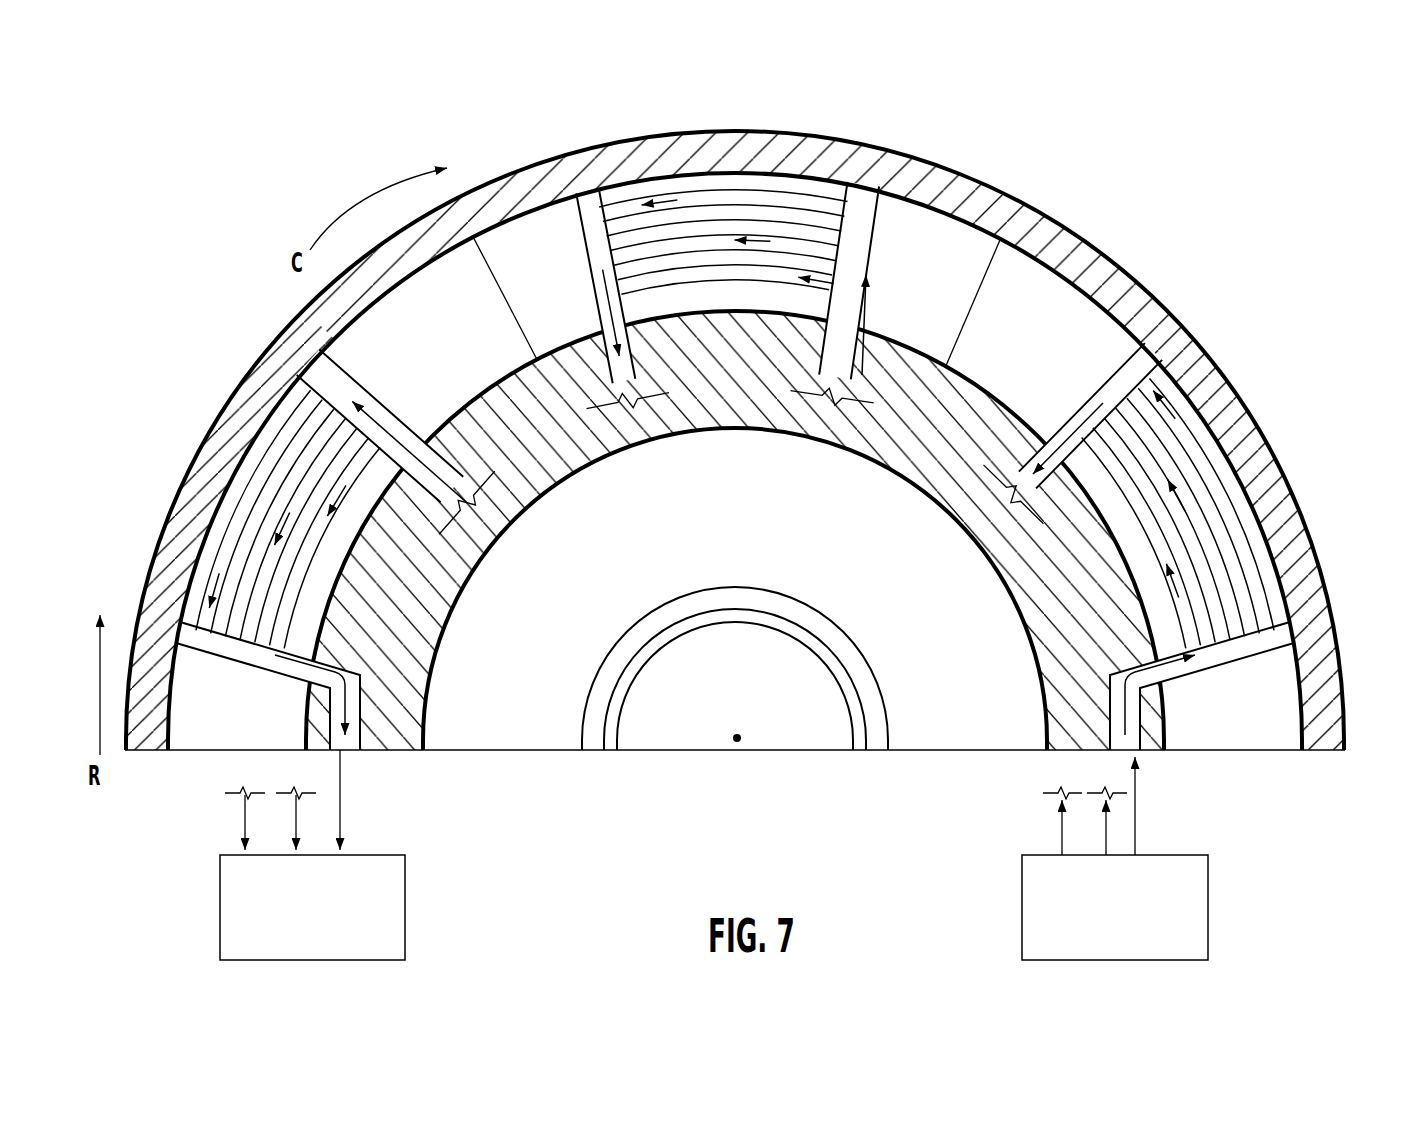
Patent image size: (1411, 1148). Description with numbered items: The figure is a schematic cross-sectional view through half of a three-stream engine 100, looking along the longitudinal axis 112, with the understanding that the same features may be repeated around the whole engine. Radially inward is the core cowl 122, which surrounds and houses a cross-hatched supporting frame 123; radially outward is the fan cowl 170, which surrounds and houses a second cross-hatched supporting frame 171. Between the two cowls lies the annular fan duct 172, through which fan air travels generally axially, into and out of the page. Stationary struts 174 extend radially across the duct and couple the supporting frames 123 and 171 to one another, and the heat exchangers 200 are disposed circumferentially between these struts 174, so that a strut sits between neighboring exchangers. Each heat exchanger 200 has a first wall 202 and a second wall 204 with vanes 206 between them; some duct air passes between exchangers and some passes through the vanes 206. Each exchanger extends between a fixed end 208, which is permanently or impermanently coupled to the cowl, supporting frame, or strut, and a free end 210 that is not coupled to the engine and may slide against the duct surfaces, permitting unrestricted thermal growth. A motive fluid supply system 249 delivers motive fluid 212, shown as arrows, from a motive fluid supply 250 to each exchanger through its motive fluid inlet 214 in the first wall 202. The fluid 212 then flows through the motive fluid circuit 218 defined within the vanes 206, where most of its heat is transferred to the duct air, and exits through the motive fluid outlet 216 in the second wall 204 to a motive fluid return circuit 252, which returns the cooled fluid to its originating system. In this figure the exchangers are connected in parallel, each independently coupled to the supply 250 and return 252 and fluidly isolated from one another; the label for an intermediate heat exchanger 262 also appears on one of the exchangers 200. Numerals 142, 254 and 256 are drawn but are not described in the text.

The three-stream engine 100 is at (262, 155).
The longitudinal axis 112 is at (740, 741).
The core cowl 122 is at (805, 440).
The supporting frame 123 is at (935, 455).
The combustion chamber 142 is at (524, 665).
The fan cowl 170 is at (508, 207).
The supporting frame 171 is at (632, 147).
The fan duct 172 is at (970, 222).
The stationary strut 174 is at (486, 262).
The heat exchanger 200 is at (230, 492).
The first wall 202 is at (580, 247).
The second wall 204 is at (362, 387).
The vanes 206 is at (265, 597).
The fixed end 208 is at (590, 187).
The free end 210 is at (884, 198).
The motive fluid 212 is at (240, 812).
The motive fluid inlet 214 is at (438, 420).
The motive fluid outlet 216 is at (602, 323).
The motive fluid circuit 218 is at (830, 250).
The motive fluid supply system 249 is at (1185, 235).
The motive fluid supply 250 is at (1127, 925).
The motive fluid return circuit 252 is at (339, 925).
The passage extension 254 is at (447, 457).
The passage end 256 is at (362, 722).
The intermediate heat exchanger 262 is at (737, 172).